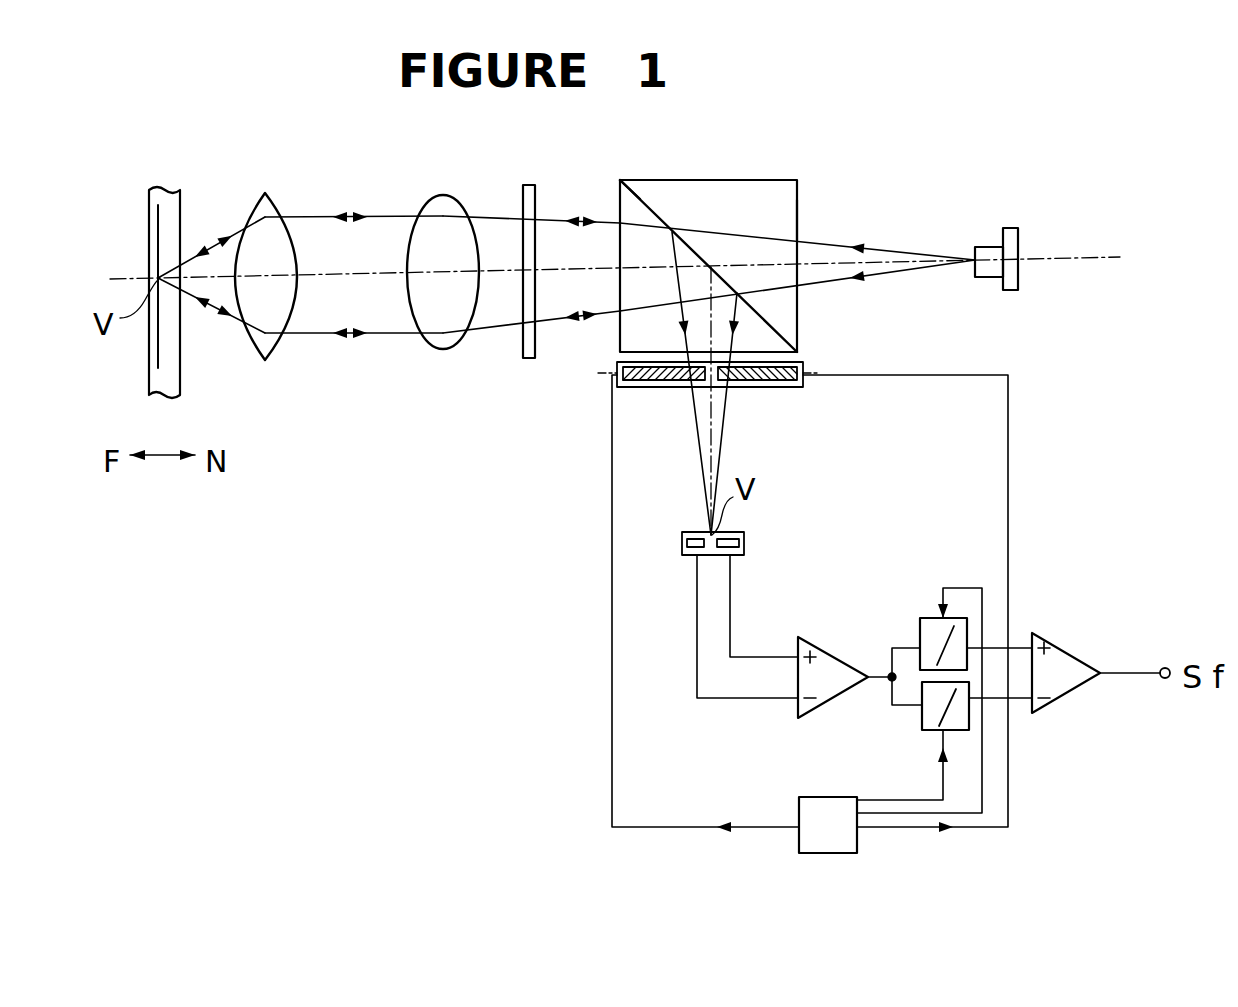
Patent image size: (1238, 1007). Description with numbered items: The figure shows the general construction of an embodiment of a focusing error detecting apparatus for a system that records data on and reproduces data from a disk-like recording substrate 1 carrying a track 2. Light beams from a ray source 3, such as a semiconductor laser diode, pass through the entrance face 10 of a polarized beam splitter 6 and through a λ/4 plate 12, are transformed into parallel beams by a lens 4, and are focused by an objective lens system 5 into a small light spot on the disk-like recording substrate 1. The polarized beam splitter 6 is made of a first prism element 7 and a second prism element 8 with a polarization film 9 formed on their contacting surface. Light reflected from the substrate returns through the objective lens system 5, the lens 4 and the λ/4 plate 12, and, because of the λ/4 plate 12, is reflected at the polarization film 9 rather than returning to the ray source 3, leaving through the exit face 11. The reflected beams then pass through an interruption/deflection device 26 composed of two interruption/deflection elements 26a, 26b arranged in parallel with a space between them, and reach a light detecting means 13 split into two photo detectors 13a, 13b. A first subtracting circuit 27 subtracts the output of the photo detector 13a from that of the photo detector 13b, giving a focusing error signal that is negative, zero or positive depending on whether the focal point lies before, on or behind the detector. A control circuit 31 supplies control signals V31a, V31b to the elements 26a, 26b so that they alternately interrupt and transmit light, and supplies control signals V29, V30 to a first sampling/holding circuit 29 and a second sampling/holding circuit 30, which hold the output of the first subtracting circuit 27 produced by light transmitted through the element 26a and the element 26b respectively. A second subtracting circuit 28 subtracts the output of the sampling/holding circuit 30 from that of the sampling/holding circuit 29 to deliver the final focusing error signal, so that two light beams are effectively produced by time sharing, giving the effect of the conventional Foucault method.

The disk-like recording substrate 1 is at (180, 200).
The track 2 is at (158, 222).
The ray source 3 is at (1008, 228).
The lens 4 is at (442, 348).
The objective lens system 5 is at (265, 360).
The polarized beam splitter 6 is at (620, 180).
The first prism element 7 is at (632, 330).
The second prism element 8 is at (752, 208).
The polarization film 9 is at (655, 212).
The entrance face 10 is at (798, 217).
The exit face 11 is at (797, 355).
The λ/4 plate 12 is at (527, 358).
The light detecting means 13 is at (721, 554).
The photo detector 13a is at (682, 552).
The photo detector 13b is at (737, 557).
The interruption/deflection device 26 is at (737, 410).
The interruption/deflection element 26a is at (642, 385).
The interruption/deflection element 26b is at (745, 383).
The first subtracting circuit 27 is at (838, 655).
The second subtracting circuit 28 is at (1070, 655).
The first sampling/holding circuit 29 is at (922, 615).
The second sampling/holding circuit 30 is at (922, 730).
The control circuit 31 is at (815, 798).
The control signal V29 is at (962, 582).
The control signal V30 is at (892, 800).
The control signal V31a is at (672, 828).
The control signal V31b is at (887, 828).